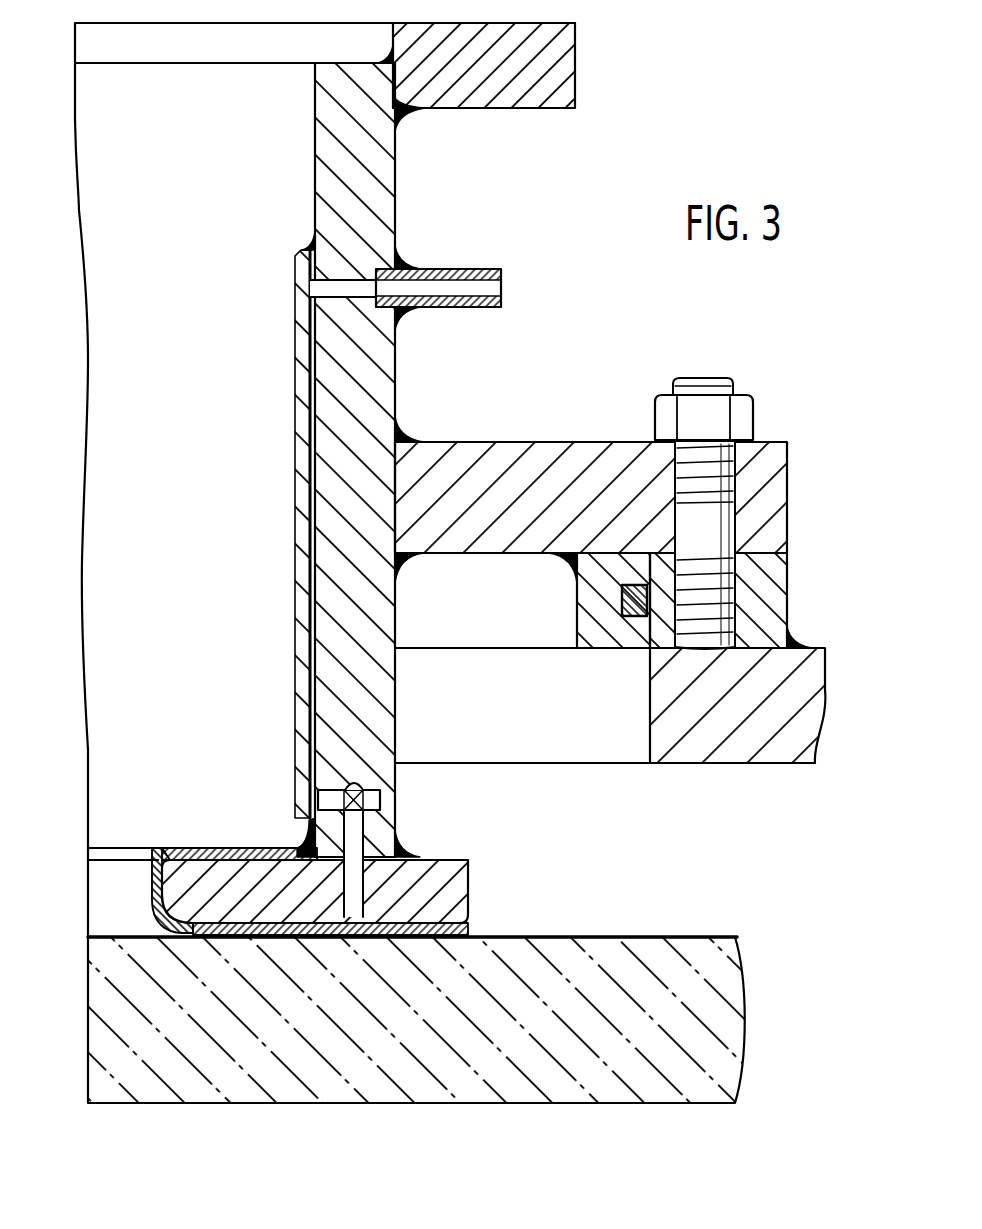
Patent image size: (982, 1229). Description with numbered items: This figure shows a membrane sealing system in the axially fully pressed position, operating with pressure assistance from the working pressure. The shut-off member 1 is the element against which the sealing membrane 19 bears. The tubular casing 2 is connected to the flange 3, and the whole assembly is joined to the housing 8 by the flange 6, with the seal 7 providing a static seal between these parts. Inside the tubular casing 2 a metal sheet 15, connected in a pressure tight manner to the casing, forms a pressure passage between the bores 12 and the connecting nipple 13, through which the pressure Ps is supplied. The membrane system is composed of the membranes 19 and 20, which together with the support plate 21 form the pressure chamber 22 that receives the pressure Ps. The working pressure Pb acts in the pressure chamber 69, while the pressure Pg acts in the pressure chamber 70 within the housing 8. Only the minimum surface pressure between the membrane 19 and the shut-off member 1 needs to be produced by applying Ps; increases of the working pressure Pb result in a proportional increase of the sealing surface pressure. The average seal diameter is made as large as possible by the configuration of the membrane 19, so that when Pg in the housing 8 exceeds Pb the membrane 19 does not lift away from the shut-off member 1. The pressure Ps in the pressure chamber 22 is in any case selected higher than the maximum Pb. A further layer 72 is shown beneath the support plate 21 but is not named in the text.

The shut-off member 1 is at (717, 1053).
The tubular casing 2 is at (383, 193).
The flange 3 is at (560, 72).
The flange 6 is at (775, 487).
The seal 7 is at (625, 608).
The housing 8 is at (800, 692).
The bores 12 is at (355, 917).
The connecting nipple 13 is at (493, 293).
The metal sheet 15 is at (300, 387).
The membrane 19 is at (150, 886).
The membrane 20 is at (260, 852).
The support plate 21 is at (443, 897).
The pressure chamber 22 is at (170, 850).
The pressure chamber 69 is at (113, 248).
The pressure chamber 70 is at (592, 827).
The bottom sealing strip 72 is at (160, 892).